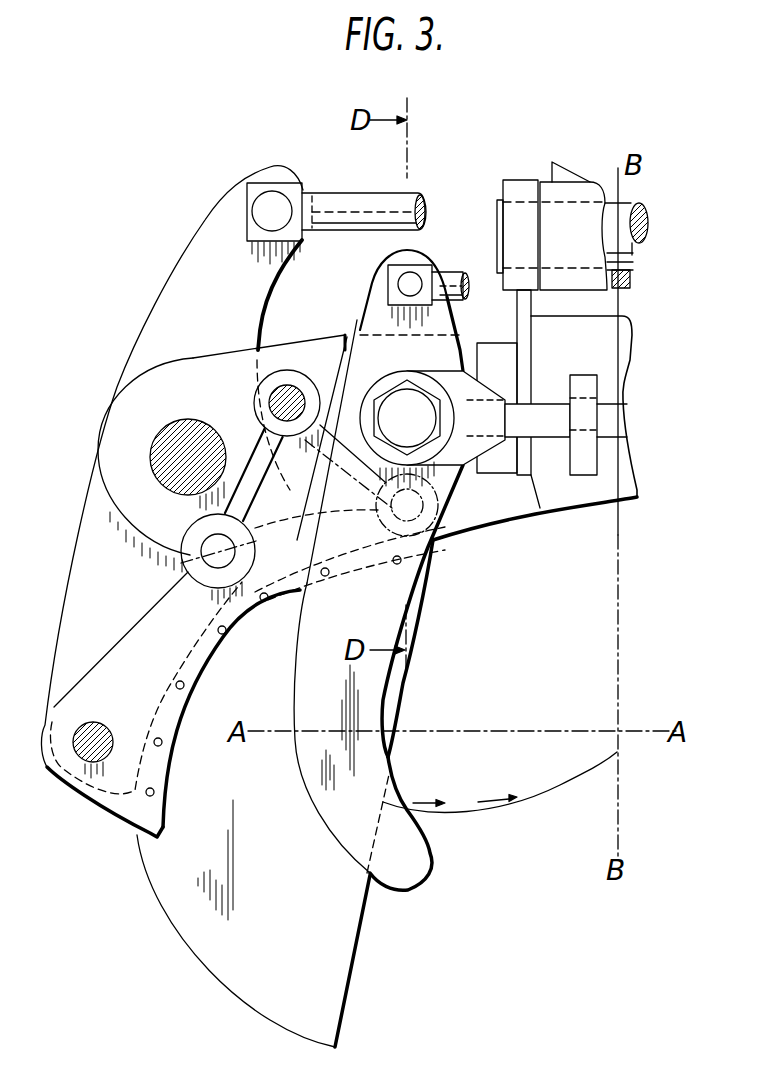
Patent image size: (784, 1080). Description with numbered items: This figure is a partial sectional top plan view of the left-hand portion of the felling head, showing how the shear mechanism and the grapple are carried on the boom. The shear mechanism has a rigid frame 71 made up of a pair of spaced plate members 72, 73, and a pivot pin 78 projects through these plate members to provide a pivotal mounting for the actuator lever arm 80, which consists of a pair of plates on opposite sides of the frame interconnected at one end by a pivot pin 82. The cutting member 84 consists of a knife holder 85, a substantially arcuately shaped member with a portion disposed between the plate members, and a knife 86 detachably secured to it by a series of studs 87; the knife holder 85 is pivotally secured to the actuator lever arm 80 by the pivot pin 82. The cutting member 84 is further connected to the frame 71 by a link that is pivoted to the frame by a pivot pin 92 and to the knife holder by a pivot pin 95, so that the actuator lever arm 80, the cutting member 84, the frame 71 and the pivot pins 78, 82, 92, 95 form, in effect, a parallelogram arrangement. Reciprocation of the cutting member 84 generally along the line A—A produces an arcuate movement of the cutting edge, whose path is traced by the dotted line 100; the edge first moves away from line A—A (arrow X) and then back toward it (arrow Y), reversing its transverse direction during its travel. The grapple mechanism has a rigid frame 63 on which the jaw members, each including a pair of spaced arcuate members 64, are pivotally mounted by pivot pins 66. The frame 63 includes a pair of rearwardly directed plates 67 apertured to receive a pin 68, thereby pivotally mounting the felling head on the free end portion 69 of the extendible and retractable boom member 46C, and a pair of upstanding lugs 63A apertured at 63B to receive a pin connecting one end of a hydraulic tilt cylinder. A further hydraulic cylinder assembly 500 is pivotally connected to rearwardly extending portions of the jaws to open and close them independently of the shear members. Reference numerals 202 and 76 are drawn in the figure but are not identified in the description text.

The pivot pin block 202 is at (272, 200).
The hydraulic cylinder assembly 500 is at (453, 280).
The pin 68 is at (497, 225).
The free end portion 69 is at (547, 192).
The extendible and retractable boom member 46C is at (565, 172).
The plate member 73 is at (283, 350).
The rigid frame 71 is at (320, 350).
The pivot pin 66 is at (388, 412).
The bracket plate 76 is at (505, 362).
The rearwardly directed plate 67 is at (530, 298).
The rigid frame 63 is at (543, 413).
The upstanding lug 63A is at (590, 383).
The aperture 63B is at (597, 402).
The pivot pin 92 is at (277, 395).
The pivot pin 78 is at (187, 437).
The actuator lever arm 80 is at (98, 559).
The pivot pin 95 is at (208, 558).
The plate member 72 is at (505, 512).
The arcuate member 64 is at (392, 594).
The pivot pin 82 is at (104, 733).
The studs 87 is at (183, 688).
The knife holder 85 is at (160, 767).
The dotted line 100 is at (555, 790).
The knife 86 is at (340, 964).
The cutting member 84 is at (332, 999).